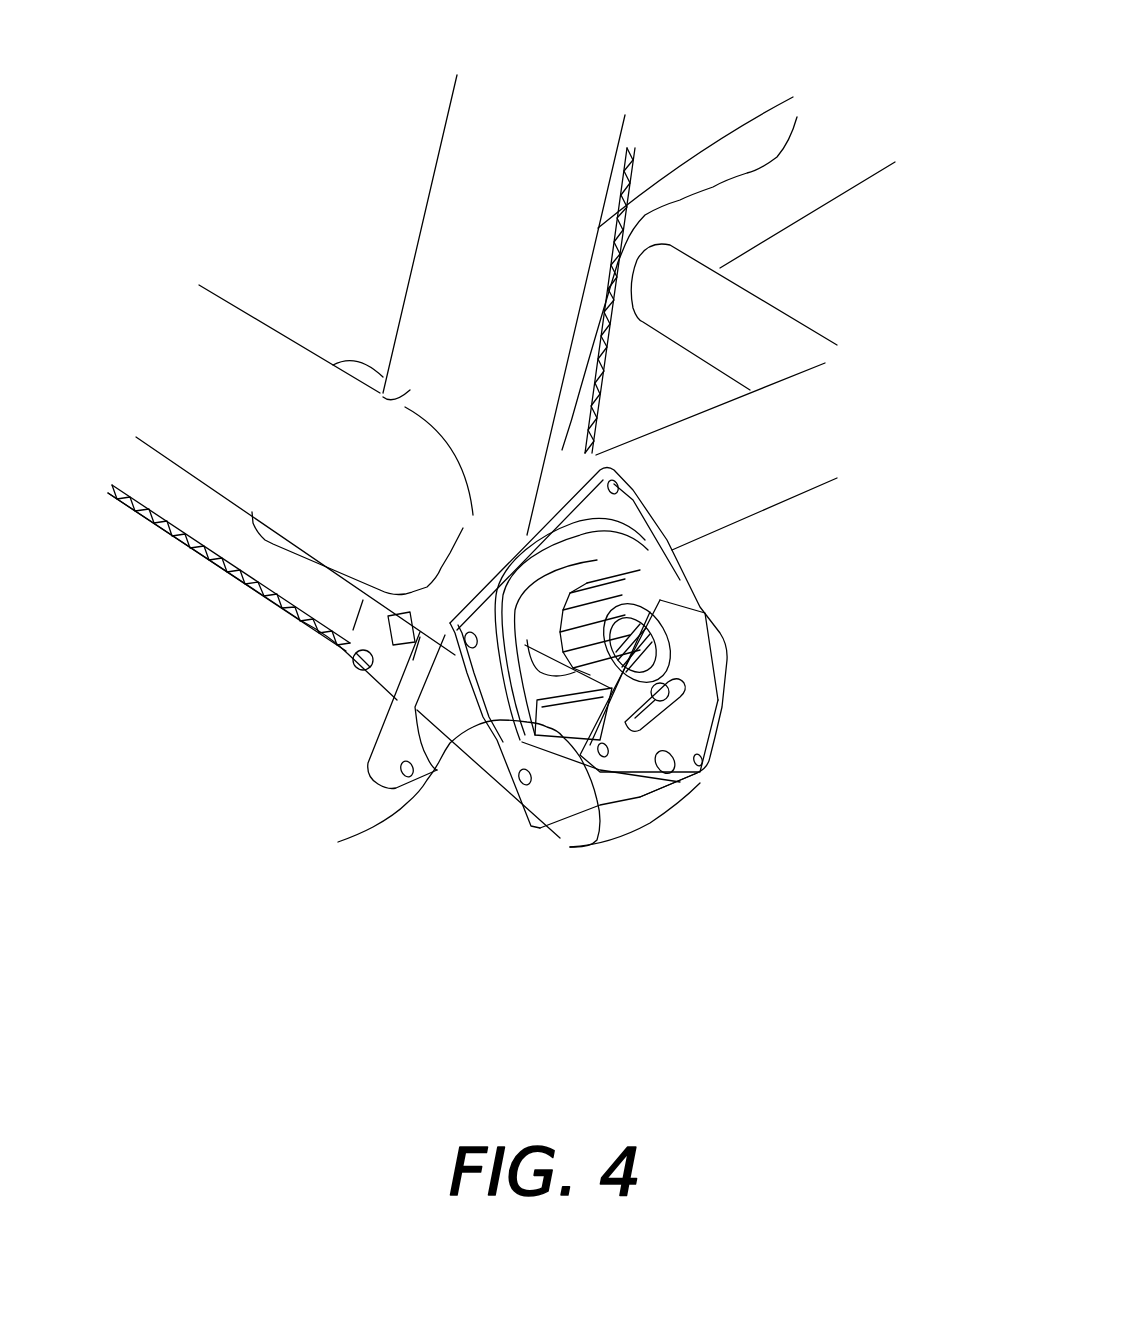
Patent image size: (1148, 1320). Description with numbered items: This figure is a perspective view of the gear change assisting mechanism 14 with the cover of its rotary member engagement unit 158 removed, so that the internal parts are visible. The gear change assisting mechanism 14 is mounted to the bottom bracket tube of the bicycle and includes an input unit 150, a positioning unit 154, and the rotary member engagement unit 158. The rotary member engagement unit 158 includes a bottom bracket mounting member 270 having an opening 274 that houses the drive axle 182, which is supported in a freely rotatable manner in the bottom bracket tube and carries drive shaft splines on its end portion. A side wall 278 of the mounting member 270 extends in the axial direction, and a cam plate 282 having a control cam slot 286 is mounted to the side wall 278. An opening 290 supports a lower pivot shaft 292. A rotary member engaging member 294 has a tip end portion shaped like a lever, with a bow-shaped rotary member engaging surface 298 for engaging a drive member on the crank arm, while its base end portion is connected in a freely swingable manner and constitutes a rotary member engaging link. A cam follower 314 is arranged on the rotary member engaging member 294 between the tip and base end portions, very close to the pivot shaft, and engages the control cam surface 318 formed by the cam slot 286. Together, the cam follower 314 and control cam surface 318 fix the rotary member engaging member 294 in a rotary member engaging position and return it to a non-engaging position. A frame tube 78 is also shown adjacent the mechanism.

The gear change assisting mechanism 14 is at (293, 757).
The seat stay 78 is at (797, 117).
The input unit 150 is at (333, 718).
The positioning unit 154 is at (450, 850).
The rotary member engagement unit 158 is at (737, 733).
The drive axle 182 is at (558, 587).
The bottom bracket mounting member 270 is at (627, 502).
The opening 274 is at (625, 540).
The side wall 278 is at (680, 617).
The cam plate 282 is at (700, 657).
The control cam slot 286 is at (670, 688).
The opening 290 is at (667, 757).
The lower pivot shaft 292 is at (677, 773).
The rotary member engaging member 294 is at (558, 723).
The rotary member engaging surface 298 is at (373, 827).
The cam follower 314 is at (657, 773).
The control cam surface 318 is at (630, 710).